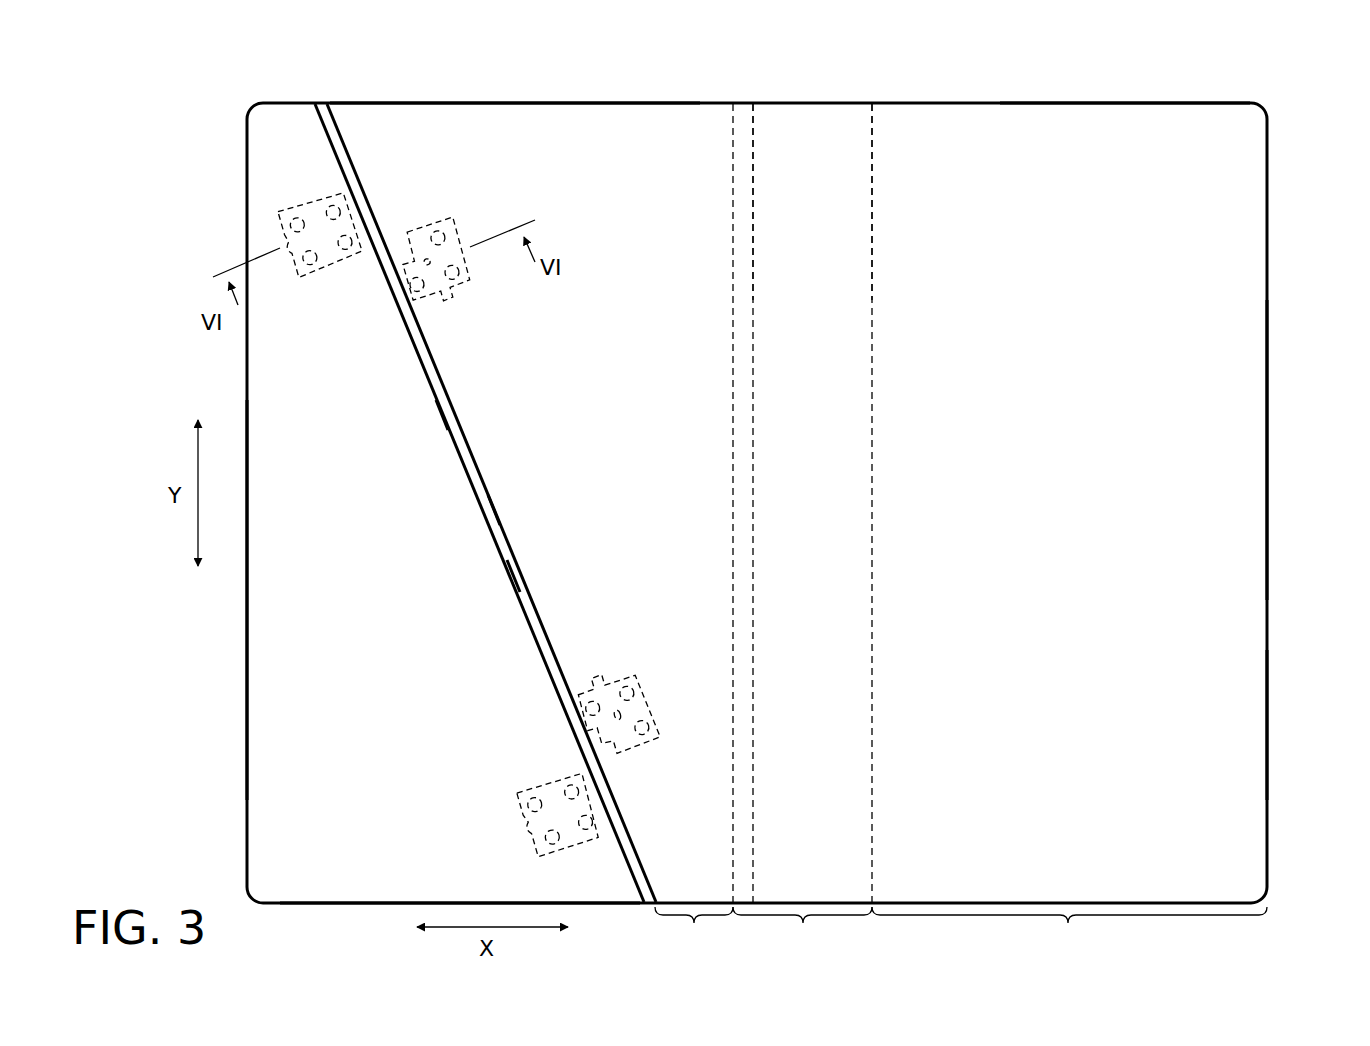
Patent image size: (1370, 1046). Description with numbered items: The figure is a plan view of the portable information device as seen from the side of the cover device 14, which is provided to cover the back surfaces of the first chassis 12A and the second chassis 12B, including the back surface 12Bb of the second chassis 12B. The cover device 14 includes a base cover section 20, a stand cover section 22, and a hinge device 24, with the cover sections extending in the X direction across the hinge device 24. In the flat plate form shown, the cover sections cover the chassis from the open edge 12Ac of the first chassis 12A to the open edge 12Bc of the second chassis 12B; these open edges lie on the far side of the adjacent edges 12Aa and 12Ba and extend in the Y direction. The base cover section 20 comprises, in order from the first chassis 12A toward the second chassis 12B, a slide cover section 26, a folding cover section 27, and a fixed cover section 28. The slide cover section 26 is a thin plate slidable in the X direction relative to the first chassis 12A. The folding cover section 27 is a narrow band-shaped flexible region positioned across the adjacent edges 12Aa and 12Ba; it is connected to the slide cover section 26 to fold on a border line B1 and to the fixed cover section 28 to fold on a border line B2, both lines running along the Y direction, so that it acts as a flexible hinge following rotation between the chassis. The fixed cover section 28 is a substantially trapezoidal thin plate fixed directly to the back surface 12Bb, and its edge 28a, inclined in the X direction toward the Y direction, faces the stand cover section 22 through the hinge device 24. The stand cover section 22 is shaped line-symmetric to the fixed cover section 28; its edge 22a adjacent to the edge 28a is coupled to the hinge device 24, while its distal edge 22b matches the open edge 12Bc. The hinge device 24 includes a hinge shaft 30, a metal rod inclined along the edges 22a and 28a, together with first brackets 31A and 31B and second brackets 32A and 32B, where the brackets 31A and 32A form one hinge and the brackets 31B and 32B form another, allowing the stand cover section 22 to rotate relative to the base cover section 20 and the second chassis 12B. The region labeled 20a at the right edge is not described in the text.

The cover device 14 is at (220, 86).
The hinge device 24 is at (368, 202).
The border line B2 is at (730, 318).
The adjacent edge 12Ba is at (755, 409).
The border line B1 is at (872, 669).
The edge 22a is at (447, 414).
The edge 28a is at (490, 510).
The hinge shaft 30 is at (522, 575).
The second chassis 12B is at (427, 100).
The back surface 12Bb is at (536, 124).
The base cover section 20 is at (928, 128).
The adjacent edge 12Aa is at (1053, 126).
The first chassis 12A is at (1155, 100).
The open edge 12Ac is at (1268, 460).
The slide cover section 26 is at (1302, 586).
The edge of first chassis 20a is at (1238, 711).
The open edge 12Bc is at (247, 617).
The distal edge 22b is at (247, 683).
The stand cover section 22 is at (310, 843).
The fixed cover section 28 is at (694, 935).
The folding cover section 27 is at (802, 935).
The second bracket 32A is at (322, 270).
The first bracket 31A is at (453, 224).
The first bracket 31B is at (628, 668).
The second bracket 32B is at (525, 780).